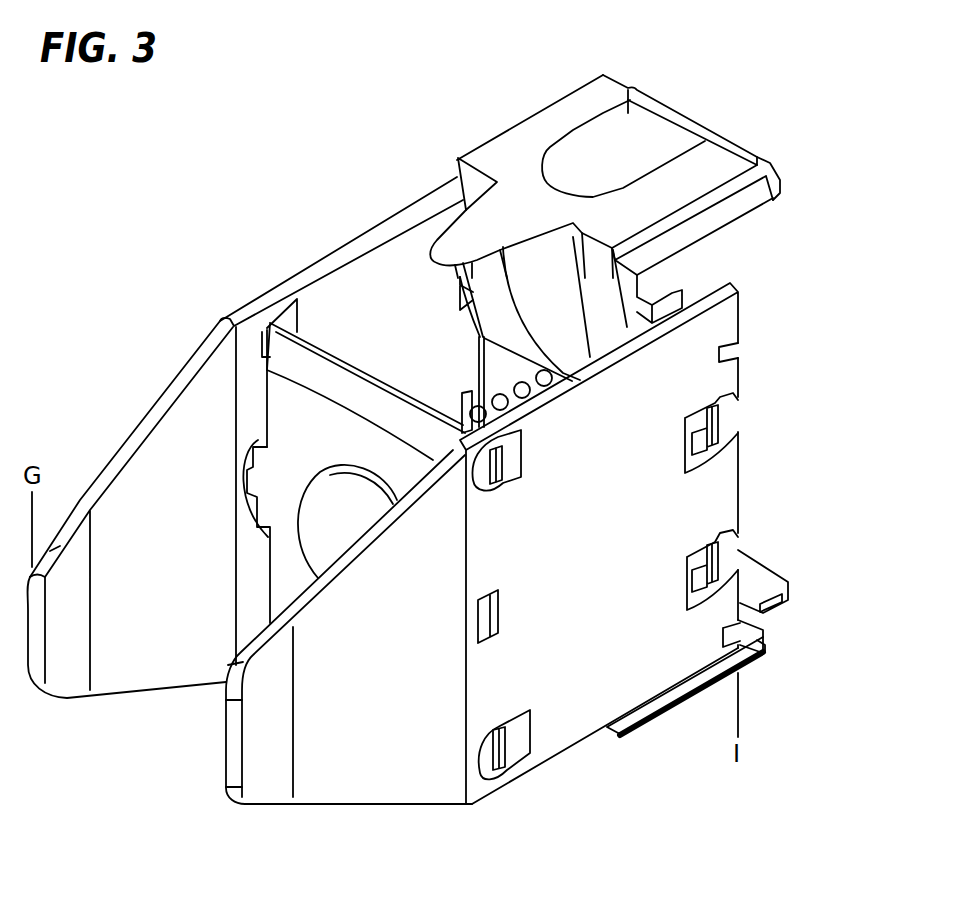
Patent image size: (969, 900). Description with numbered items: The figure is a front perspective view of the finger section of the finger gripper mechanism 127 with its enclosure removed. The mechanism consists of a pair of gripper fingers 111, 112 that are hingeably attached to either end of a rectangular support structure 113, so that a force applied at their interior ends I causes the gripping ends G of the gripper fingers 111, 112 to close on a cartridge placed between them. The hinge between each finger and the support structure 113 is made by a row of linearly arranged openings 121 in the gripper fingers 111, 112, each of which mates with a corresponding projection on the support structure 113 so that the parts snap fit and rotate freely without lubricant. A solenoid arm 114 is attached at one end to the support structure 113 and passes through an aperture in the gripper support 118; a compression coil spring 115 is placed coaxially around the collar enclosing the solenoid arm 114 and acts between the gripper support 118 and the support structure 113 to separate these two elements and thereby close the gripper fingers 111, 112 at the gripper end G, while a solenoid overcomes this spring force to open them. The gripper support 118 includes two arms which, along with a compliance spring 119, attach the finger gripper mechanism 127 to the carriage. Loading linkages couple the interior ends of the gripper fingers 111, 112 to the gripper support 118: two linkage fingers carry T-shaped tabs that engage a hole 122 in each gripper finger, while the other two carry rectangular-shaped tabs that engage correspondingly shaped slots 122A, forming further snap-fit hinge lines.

The finger gripper mechanism 127 is at (160, 338).
The gripper finger 111 is at (107, 463).
The gripper finger 112 is at (227, 745).
The support structure 113 is at (300, 417).
The solenoid arm 114 is at (335, 520).
The compression coil spring 115 is at (517, 383).
The gripper support 118 is at (687, 117).
The compliance spring 119 is at (545, 125).
The openings 121 is at (500, 610).
The hole 122 is at (687, 567).
The slot 122A is at (727, 630).